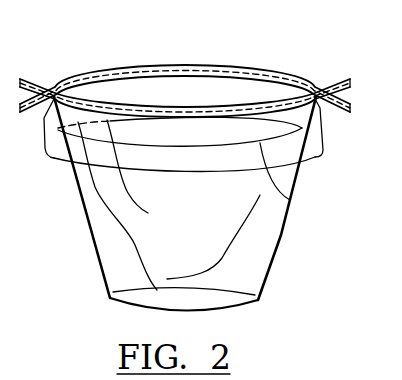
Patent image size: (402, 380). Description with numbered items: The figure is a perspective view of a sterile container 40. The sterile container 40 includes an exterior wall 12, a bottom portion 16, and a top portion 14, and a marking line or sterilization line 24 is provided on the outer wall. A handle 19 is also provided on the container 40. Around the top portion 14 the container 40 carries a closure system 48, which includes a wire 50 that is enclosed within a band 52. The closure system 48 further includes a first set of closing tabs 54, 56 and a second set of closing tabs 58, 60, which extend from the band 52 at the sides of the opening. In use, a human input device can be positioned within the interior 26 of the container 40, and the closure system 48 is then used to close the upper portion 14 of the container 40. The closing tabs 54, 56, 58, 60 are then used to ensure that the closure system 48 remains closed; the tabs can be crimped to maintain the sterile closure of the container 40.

The exterior wall 12 is at (258, 233).
The top portion 14 is at (248, 67).
The bottom portion 16 is at (128, 310).
The handle 19 is at (72, 156).
The sterilization line 24 is at (290, 200).
The interior 26 is at (172, 88).
The sterile container 40 is at (80, 262).
The closure system 48 is at (295, 71).
The wire 50 is at (107, 69).
The band 52 is at (188, 63).
The closing tab 54 is at (33, 82).
The closing tab 56 is at (46, 101).
The closing tab 58 is at (337, 83).
The closing tab 60 is at (332, 103).